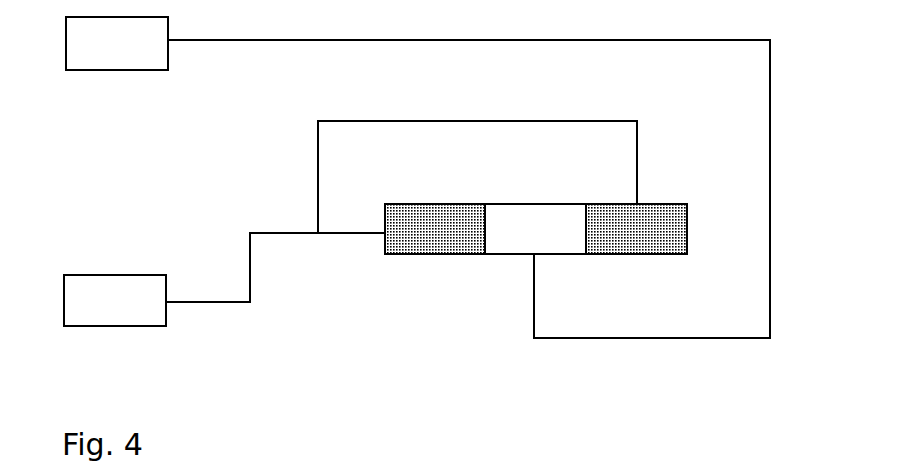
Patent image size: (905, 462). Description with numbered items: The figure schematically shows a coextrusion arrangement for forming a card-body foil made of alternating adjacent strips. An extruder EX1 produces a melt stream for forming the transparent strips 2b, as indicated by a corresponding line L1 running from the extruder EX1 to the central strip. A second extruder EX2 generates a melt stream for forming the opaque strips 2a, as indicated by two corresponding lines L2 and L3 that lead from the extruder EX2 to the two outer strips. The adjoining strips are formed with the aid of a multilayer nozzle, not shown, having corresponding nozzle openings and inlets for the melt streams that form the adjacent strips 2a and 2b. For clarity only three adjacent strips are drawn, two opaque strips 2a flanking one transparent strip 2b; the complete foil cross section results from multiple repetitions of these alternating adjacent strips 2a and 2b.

The extruder EX1 is at (117, 43).
The extruder EX2 is at (115, 300).
The line L1 is at (486, 40).
The line L2 is at (587, 121).
The line L3 is at (203, 302).
The opaque strips 2a is at (435, 254).
The transparent strips 2b is at (535, 204).